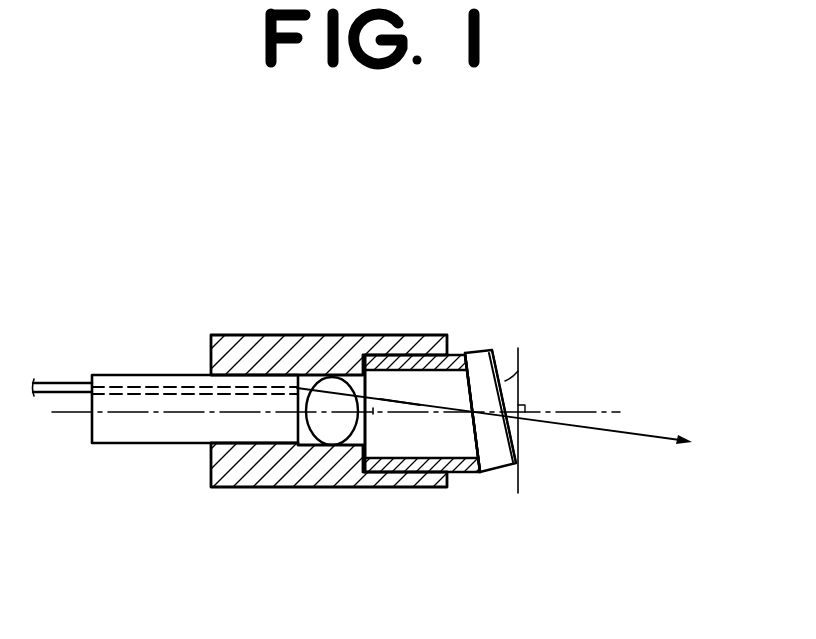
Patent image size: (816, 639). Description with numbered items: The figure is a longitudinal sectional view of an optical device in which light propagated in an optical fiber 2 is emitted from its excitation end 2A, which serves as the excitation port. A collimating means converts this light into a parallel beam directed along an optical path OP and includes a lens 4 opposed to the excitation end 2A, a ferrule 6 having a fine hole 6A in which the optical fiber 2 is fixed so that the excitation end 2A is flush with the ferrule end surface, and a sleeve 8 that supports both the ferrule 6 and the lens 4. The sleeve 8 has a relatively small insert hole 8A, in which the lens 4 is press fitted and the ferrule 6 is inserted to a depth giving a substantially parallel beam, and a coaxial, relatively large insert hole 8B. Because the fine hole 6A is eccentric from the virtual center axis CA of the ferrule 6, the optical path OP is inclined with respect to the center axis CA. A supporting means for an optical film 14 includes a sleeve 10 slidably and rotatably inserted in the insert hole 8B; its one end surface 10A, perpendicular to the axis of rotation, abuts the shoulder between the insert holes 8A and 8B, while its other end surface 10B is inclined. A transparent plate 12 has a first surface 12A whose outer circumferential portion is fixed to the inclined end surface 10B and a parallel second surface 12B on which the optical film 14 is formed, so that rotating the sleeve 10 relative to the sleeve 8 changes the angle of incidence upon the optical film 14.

The optical fiber 2 is at (67, 384).
The excitation end 2A is at (300, 374).
The lens 4 is at (318, 445).
The ferrule 6 is at (128, 443).
The fine hole 6A is at (128, 392).
The sleeve 8 is at (245, 487).
The insert hole 8A is at (362, 445).
The insert hole 8B is at (434, 469).
The sleeve 10 is at (469, 473).
The end surface 10A is at (363, 356).
The end surface 10B is at (477, 352).
The transparent plate 12 is at (485, 350).
The first surface 12A is at (466, 386).
The second surface 12B is at (518, 463).
The optical film 14 is at (517, 443).
The optical path OP is at (399, 401).
The center axis CA is at (176, 414).